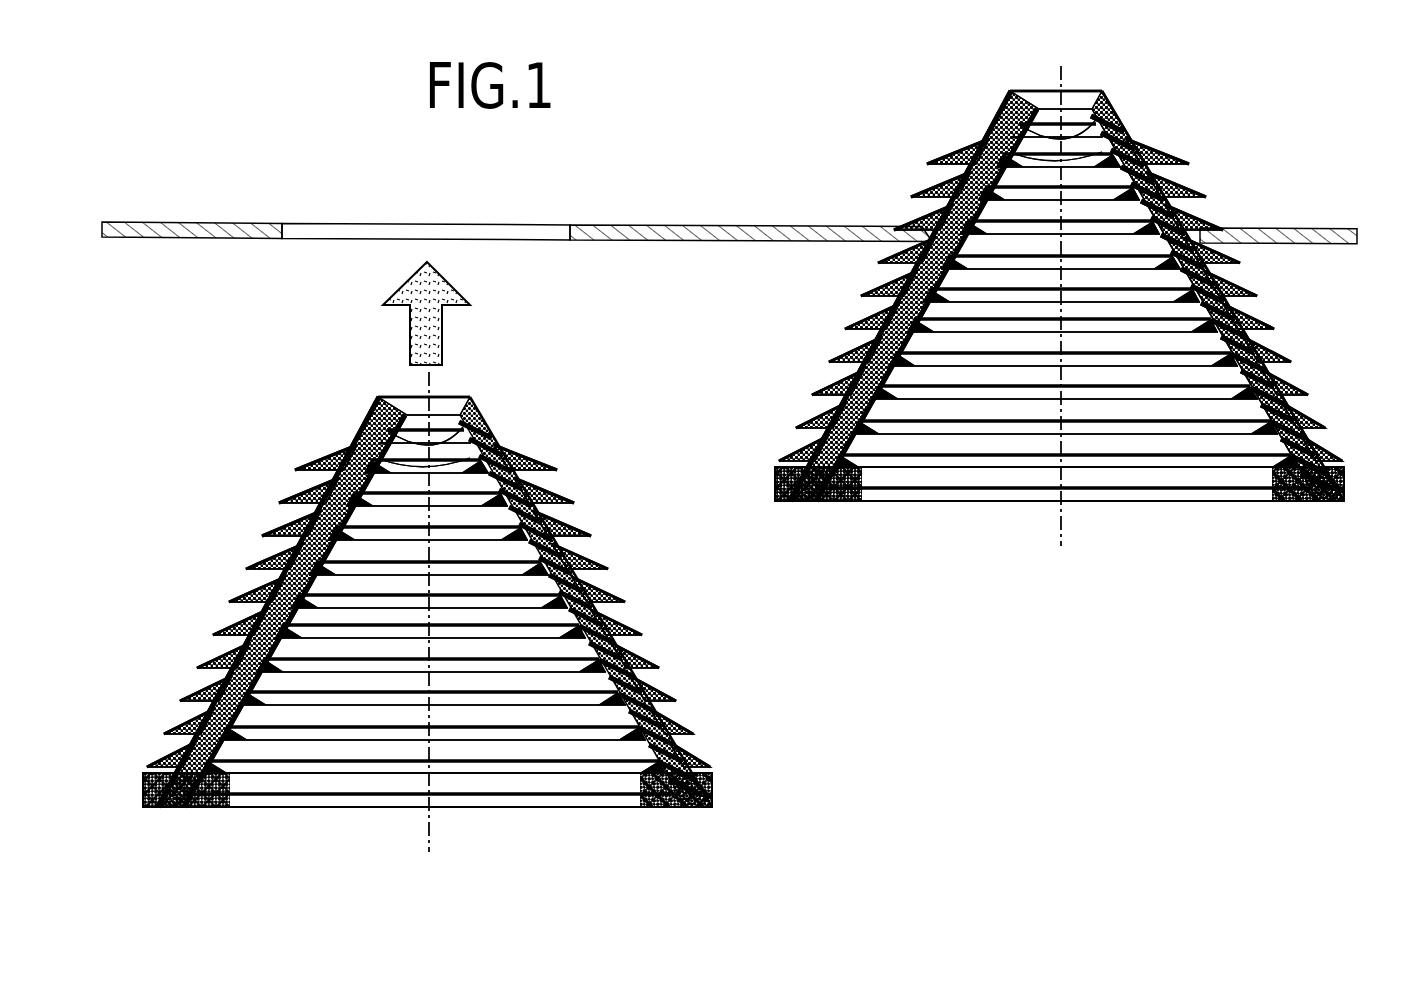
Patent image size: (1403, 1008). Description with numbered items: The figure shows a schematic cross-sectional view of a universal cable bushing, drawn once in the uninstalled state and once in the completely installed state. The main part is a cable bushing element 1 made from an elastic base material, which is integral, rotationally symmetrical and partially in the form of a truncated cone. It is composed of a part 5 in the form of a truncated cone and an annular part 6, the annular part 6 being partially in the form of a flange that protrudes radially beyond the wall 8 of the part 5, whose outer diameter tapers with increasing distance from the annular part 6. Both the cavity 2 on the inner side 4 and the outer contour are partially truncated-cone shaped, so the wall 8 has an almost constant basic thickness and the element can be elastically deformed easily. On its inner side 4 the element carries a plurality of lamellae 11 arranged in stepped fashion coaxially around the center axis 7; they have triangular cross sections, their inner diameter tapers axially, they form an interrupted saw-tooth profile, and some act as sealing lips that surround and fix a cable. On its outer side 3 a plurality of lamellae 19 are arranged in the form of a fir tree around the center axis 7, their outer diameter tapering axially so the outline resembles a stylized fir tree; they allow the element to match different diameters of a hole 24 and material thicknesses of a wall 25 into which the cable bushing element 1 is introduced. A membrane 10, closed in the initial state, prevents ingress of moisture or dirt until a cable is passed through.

The cable bushing element 1 is at (893, 193).
The cavity 2 is at (470, 716).
The outer side 3 is at (157, 705).
The inner side 4 is at (276, 780).
The part in the form of a truncated cone 5 is at (890, 256).
The annular part 6 is at (777, 481).
The center axis 7 is at (426, 824).
The wall 8 is at (222, 682).
The membrane 10 is at (400, 394).
The lamellae 11 is at (300, 634).
The lamellae 19 is at (273, 550).
The hole 24 is at (415, 229).
The wall 25 is at (208, 226).